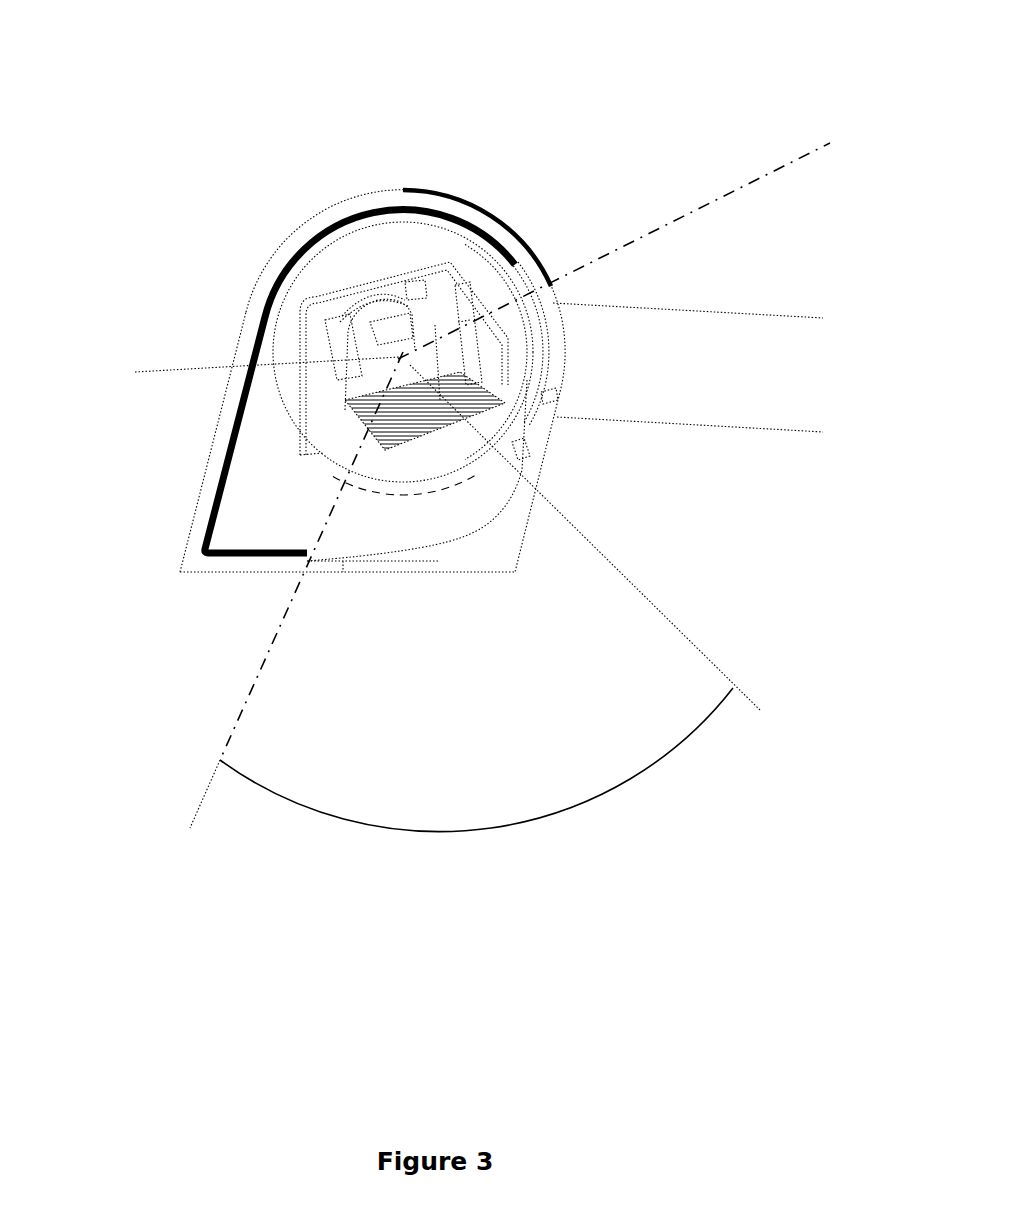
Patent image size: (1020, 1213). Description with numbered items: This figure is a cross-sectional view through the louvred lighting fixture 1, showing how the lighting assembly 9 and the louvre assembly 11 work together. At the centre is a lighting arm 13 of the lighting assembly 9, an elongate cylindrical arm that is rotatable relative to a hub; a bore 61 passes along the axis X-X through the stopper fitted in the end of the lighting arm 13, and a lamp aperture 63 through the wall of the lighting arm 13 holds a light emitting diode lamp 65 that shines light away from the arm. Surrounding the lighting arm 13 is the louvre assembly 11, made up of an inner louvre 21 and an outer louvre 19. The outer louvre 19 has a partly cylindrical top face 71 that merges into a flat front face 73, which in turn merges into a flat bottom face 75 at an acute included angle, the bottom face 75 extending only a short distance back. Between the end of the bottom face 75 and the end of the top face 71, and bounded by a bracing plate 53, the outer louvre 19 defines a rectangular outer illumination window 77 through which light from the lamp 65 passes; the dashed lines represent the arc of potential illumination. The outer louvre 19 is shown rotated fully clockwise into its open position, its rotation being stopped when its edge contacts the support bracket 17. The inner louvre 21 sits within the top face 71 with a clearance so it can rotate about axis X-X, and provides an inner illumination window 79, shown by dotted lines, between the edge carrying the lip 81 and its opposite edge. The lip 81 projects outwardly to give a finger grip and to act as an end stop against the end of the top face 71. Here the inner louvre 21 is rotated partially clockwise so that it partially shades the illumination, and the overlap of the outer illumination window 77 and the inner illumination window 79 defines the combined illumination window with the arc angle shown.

The louvred lighting fixture 1 is at (518, 180).
The lighting assembly 9 is at (373, 525).
The louvre assembly 11 is at (266, 210).
The lighting arm 13 is at (298, 273).
The support bracket 17 is at (638, 308).
The outer louvre 19 is at (317, 213).
The inner louvre 21 is at (530, 410).
The bracing plate 53 is at (493, 513).
The bore 61 is at (300, 337).
The lamp aperture 63 is at (323, 427).
The light emitting diode lamp 65 is at (387, 322).
The top face 71 is at (410, 188).
The front face 73 is at (213, 427).
The bottom face 75 is at (213, 573).
The outer illumination window 77 is at (643, 240).
The inner illumination window 79 is at (160, 366).
The lip 81 is at (530, 457).